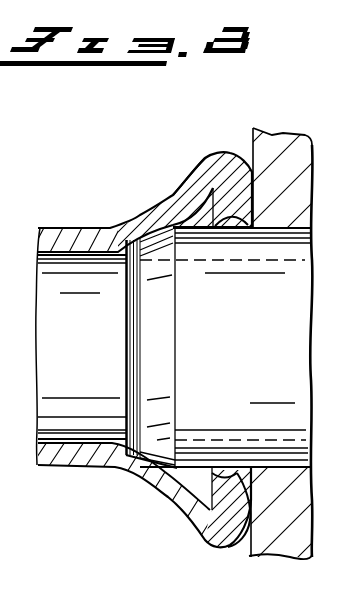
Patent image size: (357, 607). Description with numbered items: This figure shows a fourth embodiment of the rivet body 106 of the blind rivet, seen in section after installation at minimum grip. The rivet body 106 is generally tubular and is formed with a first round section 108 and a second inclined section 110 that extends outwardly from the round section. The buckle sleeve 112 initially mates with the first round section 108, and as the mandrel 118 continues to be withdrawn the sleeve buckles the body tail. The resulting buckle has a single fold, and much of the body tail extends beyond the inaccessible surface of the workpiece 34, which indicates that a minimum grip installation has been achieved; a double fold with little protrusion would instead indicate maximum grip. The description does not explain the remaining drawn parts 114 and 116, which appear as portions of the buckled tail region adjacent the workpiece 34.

The workpiece 34 is at (290, 146).
The rivet body 106 is at (297, 436).
The first round section 108 is at (127, 232).
The second inclined section 110 is at (162, 245).
The buckle sleeve 112 is at (78, 238).
The flared end 114 is at (217, 537).
The lower nut 116 is at (237, 535).
The mandrel 118 is at (57, 282).